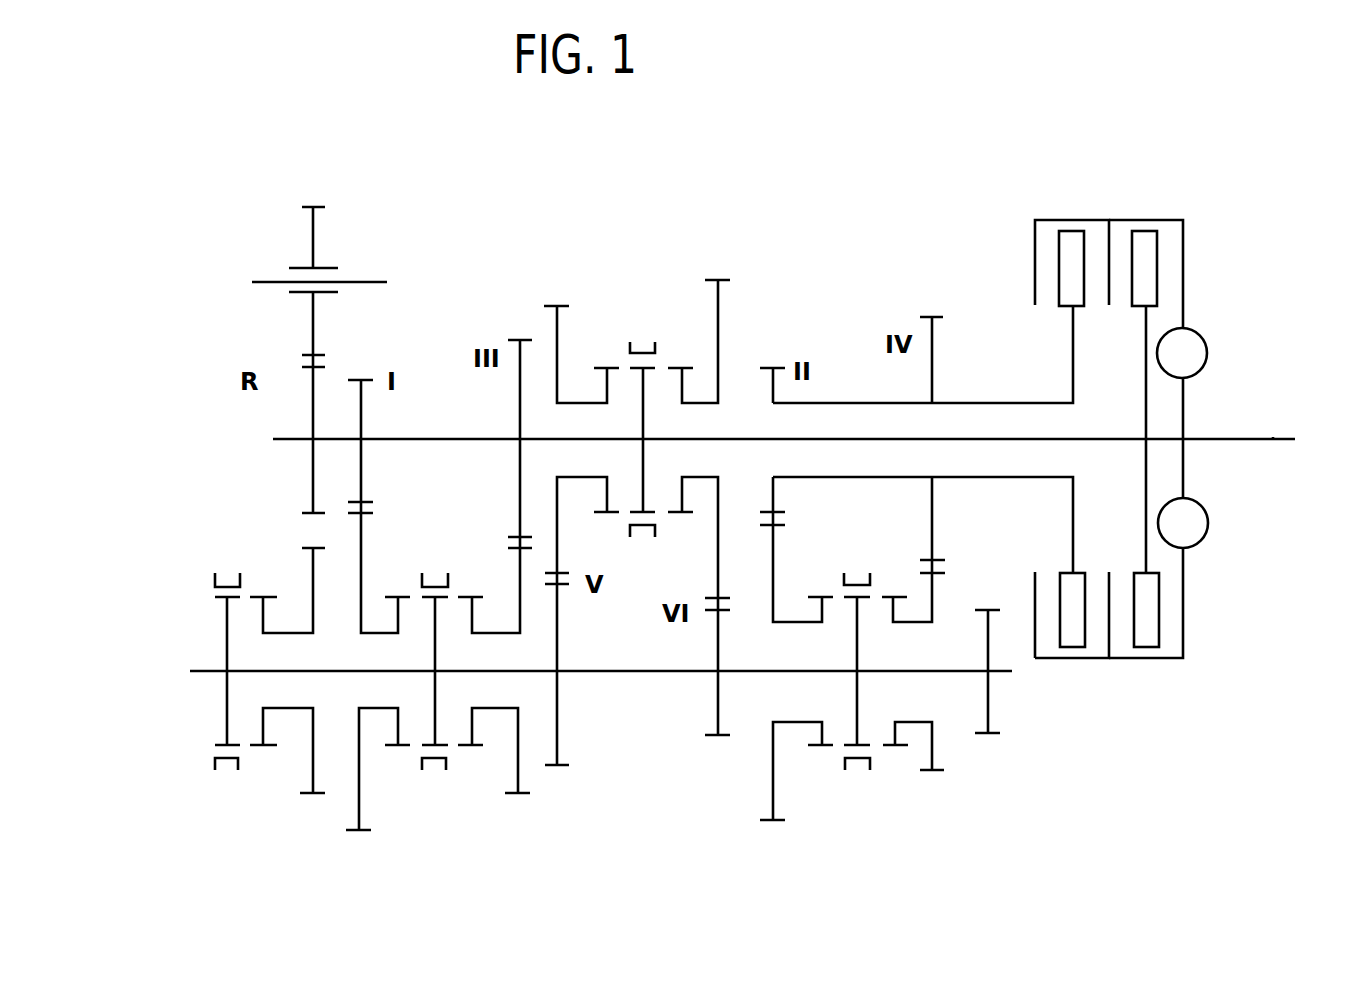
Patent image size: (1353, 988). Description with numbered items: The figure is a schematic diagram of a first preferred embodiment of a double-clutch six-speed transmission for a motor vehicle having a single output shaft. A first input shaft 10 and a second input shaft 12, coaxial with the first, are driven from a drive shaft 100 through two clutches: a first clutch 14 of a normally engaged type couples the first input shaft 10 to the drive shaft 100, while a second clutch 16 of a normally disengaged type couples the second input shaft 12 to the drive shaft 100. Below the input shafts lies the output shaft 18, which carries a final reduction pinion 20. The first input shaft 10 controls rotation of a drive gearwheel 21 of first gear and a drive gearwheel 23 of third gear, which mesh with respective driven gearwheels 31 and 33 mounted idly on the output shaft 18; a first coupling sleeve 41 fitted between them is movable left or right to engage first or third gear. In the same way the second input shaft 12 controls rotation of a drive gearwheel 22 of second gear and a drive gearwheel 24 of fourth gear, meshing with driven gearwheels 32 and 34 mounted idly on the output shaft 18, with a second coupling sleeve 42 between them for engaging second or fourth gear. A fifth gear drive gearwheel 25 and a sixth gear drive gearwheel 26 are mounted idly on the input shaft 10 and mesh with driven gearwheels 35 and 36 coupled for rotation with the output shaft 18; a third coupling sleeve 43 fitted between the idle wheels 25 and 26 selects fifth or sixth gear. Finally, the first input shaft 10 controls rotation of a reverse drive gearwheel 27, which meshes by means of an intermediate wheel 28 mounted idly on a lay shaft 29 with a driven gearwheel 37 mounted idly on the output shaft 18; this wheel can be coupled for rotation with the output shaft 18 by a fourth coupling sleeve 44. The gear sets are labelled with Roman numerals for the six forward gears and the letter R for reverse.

The drive shaft 100 is at (1273, 438).
The first input shaft 10 is at (437, 438).
The second input shaft 12 is at (860, 403).
The first clutch 14 is at (1172, 242).
The second clutch 16 is at (1045, 242).
The output shaft 18 is at (205, 668).
The final reduction pinion 20 is at (995, 698).
The drive gearwheel of first gear 21 is at (366, 380).
The drive gearwheel of second gear 22 is at (765, 392).
The drive gearwheel of third gear 23 is at (520, 338).
The drive gearwheel of fourth gear 24 is at (937, 316).
The fifth gear drive gearwheel 25 is at (567, 306).
The sixth gear drive gearwheel 26 is at (722, 278).
The reverse drive gearwheel 27 is at (305, 513).
The intermediate wheel 28 is at (305, 205).
The lay shaft 29 is at (368, 282).
The driven gearwheel of first gear 31 is at (365, 832).
The driven gearwheel of second gear 32 is at (780, 790).
The driven gearwheel of third gear 33 is at (528, 797).
The driven gearwheel of fourth gear 34 is at (937, 772).
The driven gearwheel of fifth gear 35 is at (562, 768).
The driven gearwheel of sixth gear 36 is at (720, 740).
The reverse driven gearwheel 37 is at (305, 795).
The first coupling sleeve 41 is at (447, 765).
The second coupling sleeve 42 is at (870, 765).
The third coupling sleeve 43 is at (656, 345).
The fourth coupling sleeve 44 is at (215, 768).